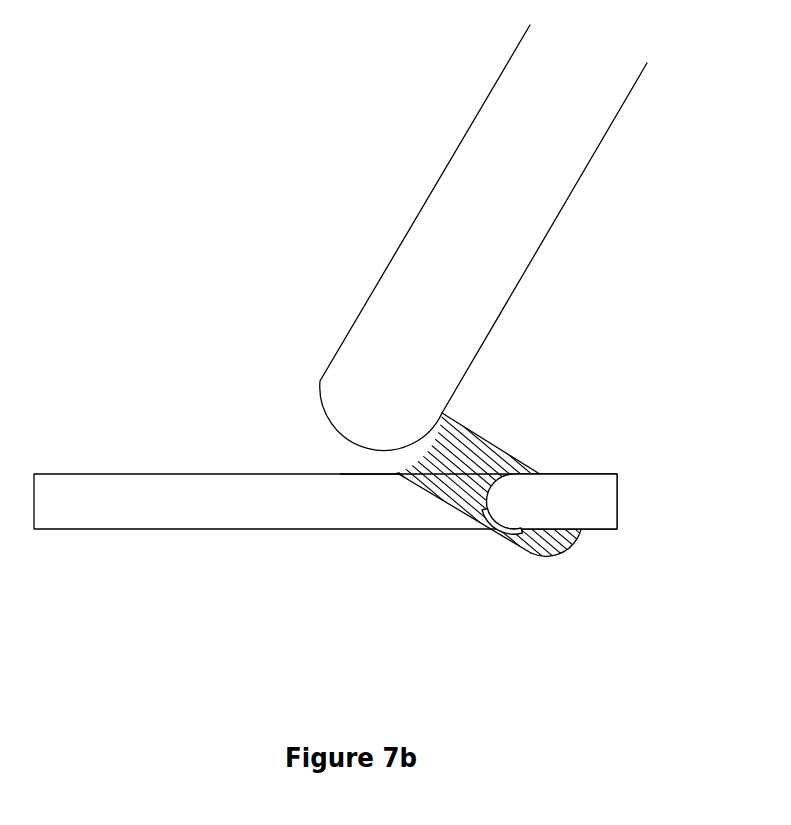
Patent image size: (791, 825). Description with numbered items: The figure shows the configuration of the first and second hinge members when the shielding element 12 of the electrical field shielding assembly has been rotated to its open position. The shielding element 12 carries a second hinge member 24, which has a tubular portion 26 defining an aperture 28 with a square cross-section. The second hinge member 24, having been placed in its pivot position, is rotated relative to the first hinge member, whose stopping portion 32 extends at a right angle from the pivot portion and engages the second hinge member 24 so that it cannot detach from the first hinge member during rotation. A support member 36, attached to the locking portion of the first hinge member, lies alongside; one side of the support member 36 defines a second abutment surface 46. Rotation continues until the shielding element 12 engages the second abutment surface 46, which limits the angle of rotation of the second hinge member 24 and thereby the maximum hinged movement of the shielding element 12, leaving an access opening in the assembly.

The shielding element 12 is at (475, 185).
The second hinge member 24 is at (477, 447).
The tubular portion 26 is at (537, 560).
The aperture 28 is at (492, 508).
The stopping portion 32 is at (597, 488).
The support member 36 is at (182, 507).
The second abutment surface 46 is at (258, 472).